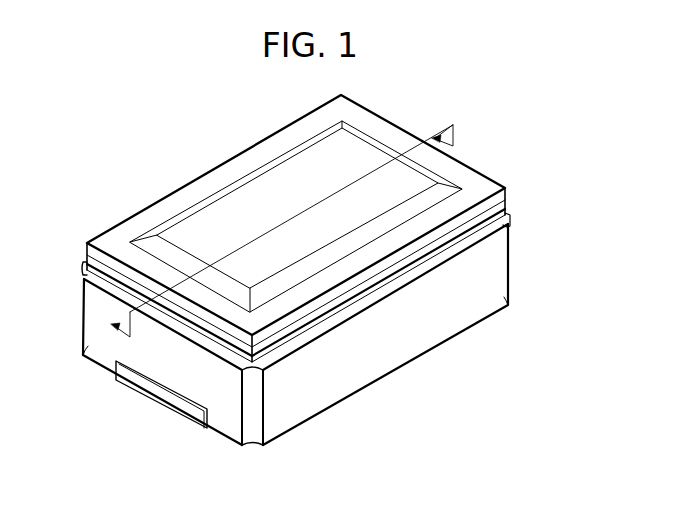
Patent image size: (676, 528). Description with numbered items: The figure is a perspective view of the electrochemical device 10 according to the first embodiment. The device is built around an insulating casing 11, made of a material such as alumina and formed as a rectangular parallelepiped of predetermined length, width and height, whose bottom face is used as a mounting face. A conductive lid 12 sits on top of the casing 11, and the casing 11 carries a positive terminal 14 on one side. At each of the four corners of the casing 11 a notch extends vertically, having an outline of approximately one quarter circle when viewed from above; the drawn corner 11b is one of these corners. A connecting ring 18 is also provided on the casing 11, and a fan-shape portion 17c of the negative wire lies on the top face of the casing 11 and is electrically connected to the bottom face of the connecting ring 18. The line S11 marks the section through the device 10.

The electrochemical device 10 is at (299, 296).
The casing 11 is at (92, 313).
The chamfered corner portion of body 11b is at (86, 346).
The lid 12 is at (92, 249).
The positive terminal 14 is at (153, 393).
The fan-shape portion 17c is at (512, 222).
The connecting ring 18 is at (86, 266).
The section line S11- S11 is at (143, 166).